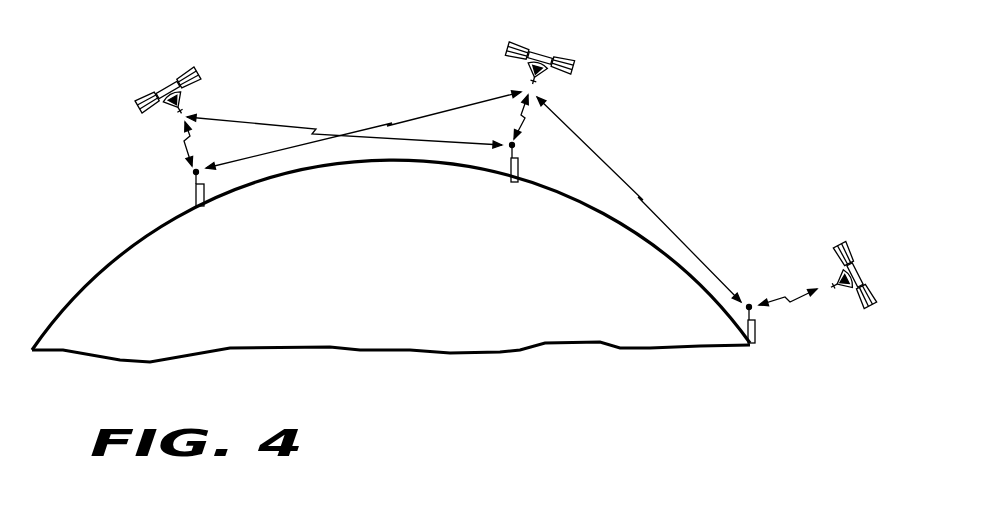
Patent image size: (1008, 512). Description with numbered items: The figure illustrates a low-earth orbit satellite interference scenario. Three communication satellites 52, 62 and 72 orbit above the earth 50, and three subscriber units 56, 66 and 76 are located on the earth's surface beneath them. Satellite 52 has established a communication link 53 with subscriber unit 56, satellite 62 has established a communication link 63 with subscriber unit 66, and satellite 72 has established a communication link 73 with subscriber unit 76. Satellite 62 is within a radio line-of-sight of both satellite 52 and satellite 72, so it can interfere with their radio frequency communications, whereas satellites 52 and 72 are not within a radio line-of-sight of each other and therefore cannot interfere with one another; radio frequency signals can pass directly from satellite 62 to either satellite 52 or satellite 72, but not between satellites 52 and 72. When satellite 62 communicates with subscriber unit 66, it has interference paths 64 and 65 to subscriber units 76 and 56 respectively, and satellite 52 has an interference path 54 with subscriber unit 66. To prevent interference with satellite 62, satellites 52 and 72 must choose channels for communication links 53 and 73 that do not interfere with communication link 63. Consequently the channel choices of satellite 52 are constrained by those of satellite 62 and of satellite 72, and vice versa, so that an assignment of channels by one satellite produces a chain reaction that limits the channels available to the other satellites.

The earth 50 is at (107, 268).
The satellite 52 is at (160, 67).
The communication link 53 is at (184, 150).
The interference path 54 is at (252, 120).
The subscriber unit 56 is at (195, 191).
The satellite 62 is at (549, 42).
The communication link 63 is at (519, 115).
The interference path 64 is at (667, 220).
The interference path 65 is at (440, 108).
The subscriber unit 66 is at (518, 172).
The satellite 72 is at (845, 247).
The communication link 73 is at (782, 299).
The subscriber unit 76 is at (757, 333).